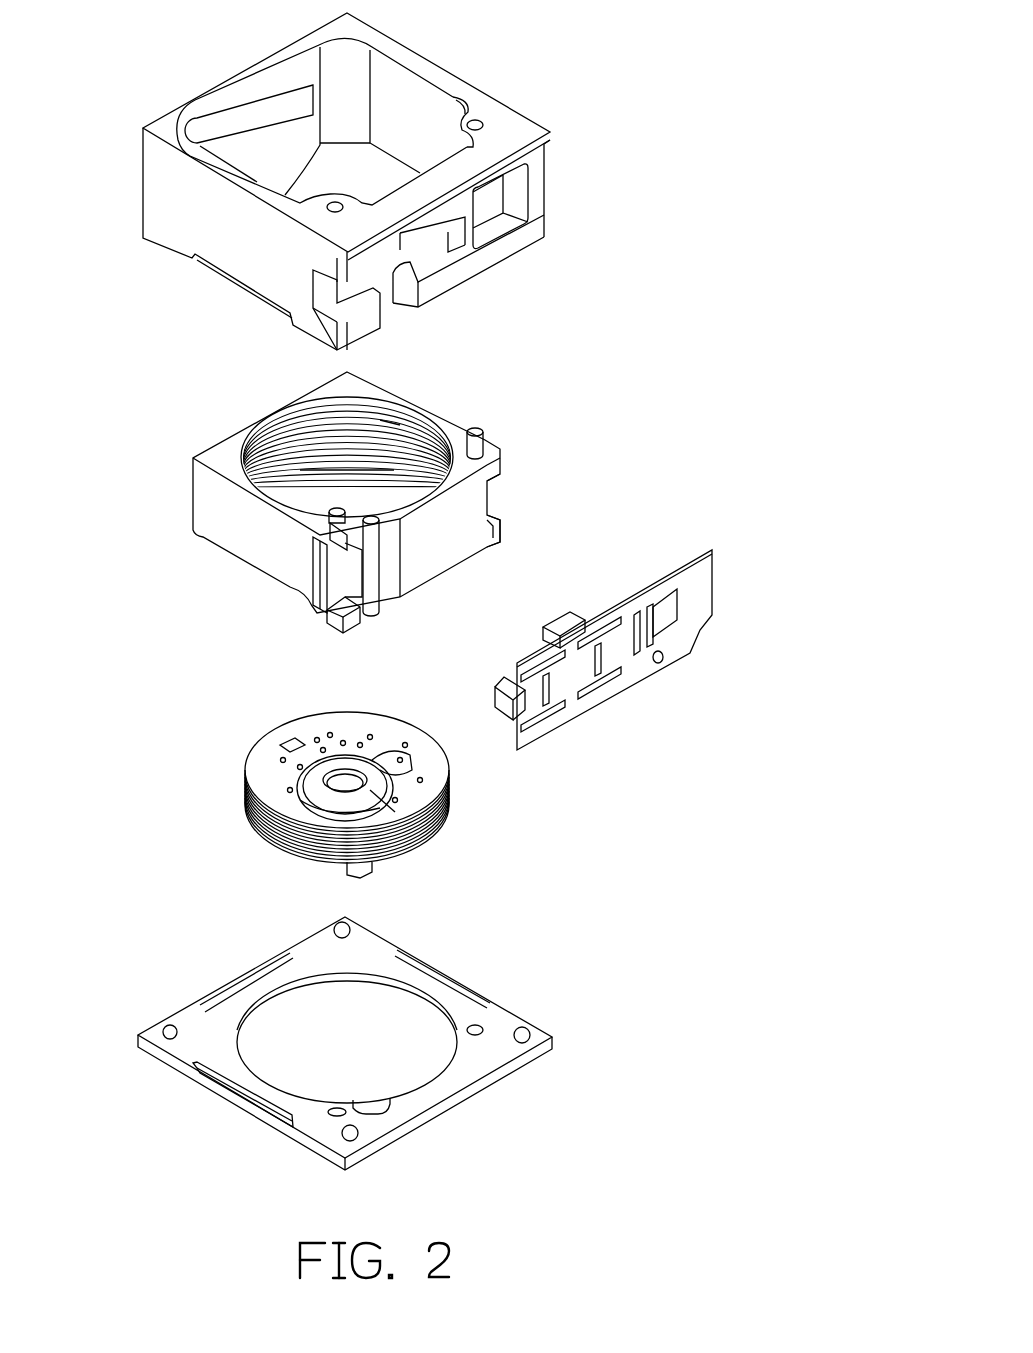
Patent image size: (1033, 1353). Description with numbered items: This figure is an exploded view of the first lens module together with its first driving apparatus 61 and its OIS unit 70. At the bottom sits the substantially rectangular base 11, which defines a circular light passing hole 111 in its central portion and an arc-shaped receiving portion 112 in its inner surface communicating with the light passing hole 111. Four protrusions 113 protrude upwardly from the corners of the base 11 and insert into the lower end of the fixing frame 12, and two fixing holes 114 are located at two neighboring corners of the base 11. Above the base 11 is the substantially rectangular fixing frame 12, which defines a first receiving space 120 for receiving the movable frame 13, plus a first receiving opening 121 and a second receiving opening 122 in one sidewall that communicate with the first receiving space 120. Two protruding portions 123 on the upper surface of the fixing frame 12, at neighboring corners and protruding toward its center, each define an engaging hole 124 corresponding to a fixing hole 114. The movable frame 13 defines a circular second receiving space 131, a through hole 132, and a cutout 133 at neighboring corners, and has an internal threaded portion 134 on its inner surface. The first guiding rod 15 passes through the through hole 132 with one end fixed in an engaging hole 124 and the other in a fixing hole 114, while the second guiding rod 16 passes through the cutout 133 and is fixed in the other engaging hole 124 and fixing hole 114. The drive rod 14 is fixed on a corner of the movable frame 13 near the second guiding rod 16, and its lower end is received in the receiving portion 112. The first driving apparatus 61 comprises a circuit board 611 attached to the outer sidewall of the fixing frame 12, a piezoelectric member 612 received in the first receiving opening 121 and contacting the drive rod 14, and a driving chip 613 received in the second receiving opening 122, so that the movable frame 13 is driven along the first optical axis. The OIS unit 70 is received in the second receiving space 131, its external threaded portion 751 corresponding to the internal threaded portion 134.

The base 11 is at (379, 1049).
The light passing hole 111 is at (393, 1012).
The receiving portion 112 is at (373, 1103).
The protrusions 113 is at (525, 1032).
The fixing holes 114 is at (477, 1028).
The fixing frame 12 is at (386, 176).
The first receiving space 120 is at (312, 173).
The first receiving opening 121 is at (423, 248).
The second receiving opening 122 is at (518, 193).
The protruding portions 123 is at (458, 110).
The engaging holes 124 is at (478, 122).
The movable frame 13 is at (346, 519).
The second receiving space 131 is at (307, 488).
The through hole 132 is at (488, 477).
The cutout 133 is at (313, 547).
The internal threaded portion 134 is at (390, 423).
The drive rod 14 is at (373, 597).
The first guiding rod 15 is at (480, 447).
The second guiding rod 16 is at (333, 523).
The first driving apparatus 61 is at (639, 668).
The circuit board 611 is at (700, 583).
The piezoelectric member 612 is at (503, 717).
The driving chip 613 is at (670, 618).
The OIS unit 70 is at (303, 791).
The external threaded portion 751 is at (248, 800).